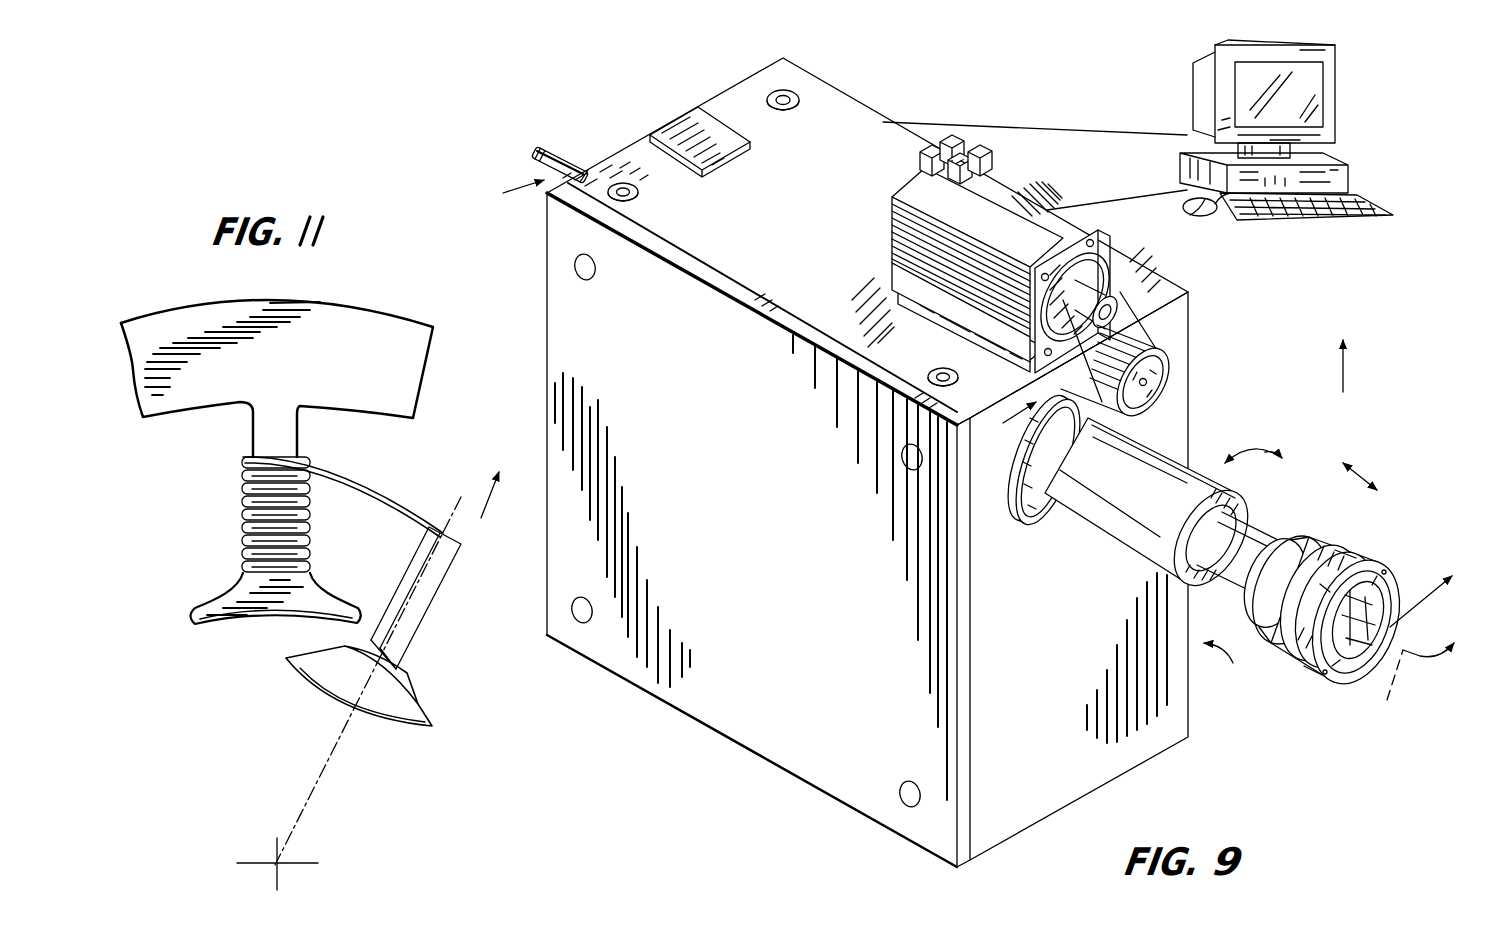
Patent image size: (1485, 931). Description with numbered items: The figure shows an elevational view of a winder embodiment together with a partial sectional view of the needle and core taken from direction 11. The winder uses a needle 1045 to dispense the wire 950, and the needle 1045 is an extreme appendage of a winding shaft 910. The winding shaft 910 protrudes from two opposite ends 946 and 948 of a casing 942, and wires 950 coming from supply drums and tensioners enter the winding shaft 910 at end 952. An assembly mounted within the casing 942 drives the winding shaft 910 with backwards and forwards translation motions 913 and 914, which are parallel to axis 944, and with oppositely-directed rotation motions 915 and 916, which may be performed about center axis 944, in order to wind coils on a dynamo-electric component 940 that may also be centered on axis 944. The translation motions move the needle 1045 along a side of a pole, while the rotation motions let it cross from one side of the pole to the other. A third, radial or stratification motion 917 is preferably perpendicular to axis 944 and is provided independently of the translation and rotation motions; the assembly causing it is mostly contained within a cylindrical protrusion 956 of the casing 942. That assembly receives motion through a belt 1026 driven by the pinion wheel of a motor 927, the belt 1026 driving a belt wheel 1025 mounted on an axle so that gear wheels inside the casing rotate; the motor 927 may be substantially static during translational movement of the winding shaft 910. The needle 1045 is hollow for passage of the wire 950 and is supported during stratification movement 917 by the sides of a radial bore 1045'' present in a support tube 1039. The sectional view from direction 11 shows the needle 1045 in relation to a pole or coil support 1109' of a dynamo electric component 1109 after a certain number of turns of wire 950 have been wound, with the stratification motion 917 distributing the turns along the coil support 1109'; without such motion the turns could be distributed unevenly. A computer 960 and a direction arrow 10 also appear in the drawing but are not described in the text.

In FIG. 9, the winding shaft 910 is at (578, 158).
In FIG. 9, the wire 950 is at (537, 153).
In FIG. 11, the wire 950 is at (402, 490).
In FIG. 9, the end 952 is at (548, 143).
In FIG. 9, the end 948 is at (498, 186).
In FIG. 9, the casing 942 is at (883, 122).
In FIG. 9, the motor 927 is at (1043, 210).
In FIG. 9, the belt 1026 is at (1150, 300).
In FIG. 9, the belt wheel 1025 is at (1177, 373).
In FIG. 9, the direction arrow 10 is at (1434, 704).
In FIG. 9, the cylindrical protrusion 956 is at (1110, 549).
In FIG. 9, the dynamo-electric component 940 is at (1337, 541).
In FIG. 9, the radial motion 917 is at (1325, 366).
In FIG. 11, the radial motion 917 is at (500, 506).
In FIG. 9, the rotation motion 915 is at (1240, 444).
In FIG. 9, the rotation motion 916 is at (1285, 438).
In FIG. 9, the translation motion 913 is at (1351, 461).
In FIG. 9, the translation motion 914 is at (1390, 493).
In FIG. 9, the end 946 is at (1231, 677).
In FIG. 9, the view direction arrow 11 is at (1432, 603).
In FIG. 9, the axis 944 is at (1380, 693).
In FIG. 11, the axis 944 is at (293, 865).
In FIG. 9, the computer 960 is at (1350, 178).
In FIG. 11, the dynamo electric component 1109 is at (307, 373).
In FIG. 11, the coil support 1109' is at (260, 530).
In FIG. 11, the needle 1045 is at (432, 598).
In FIG. 11, the radial bore 1045'' is at (448, 663).
In FIG. 11, the support tube 1039 is at (428, 720).